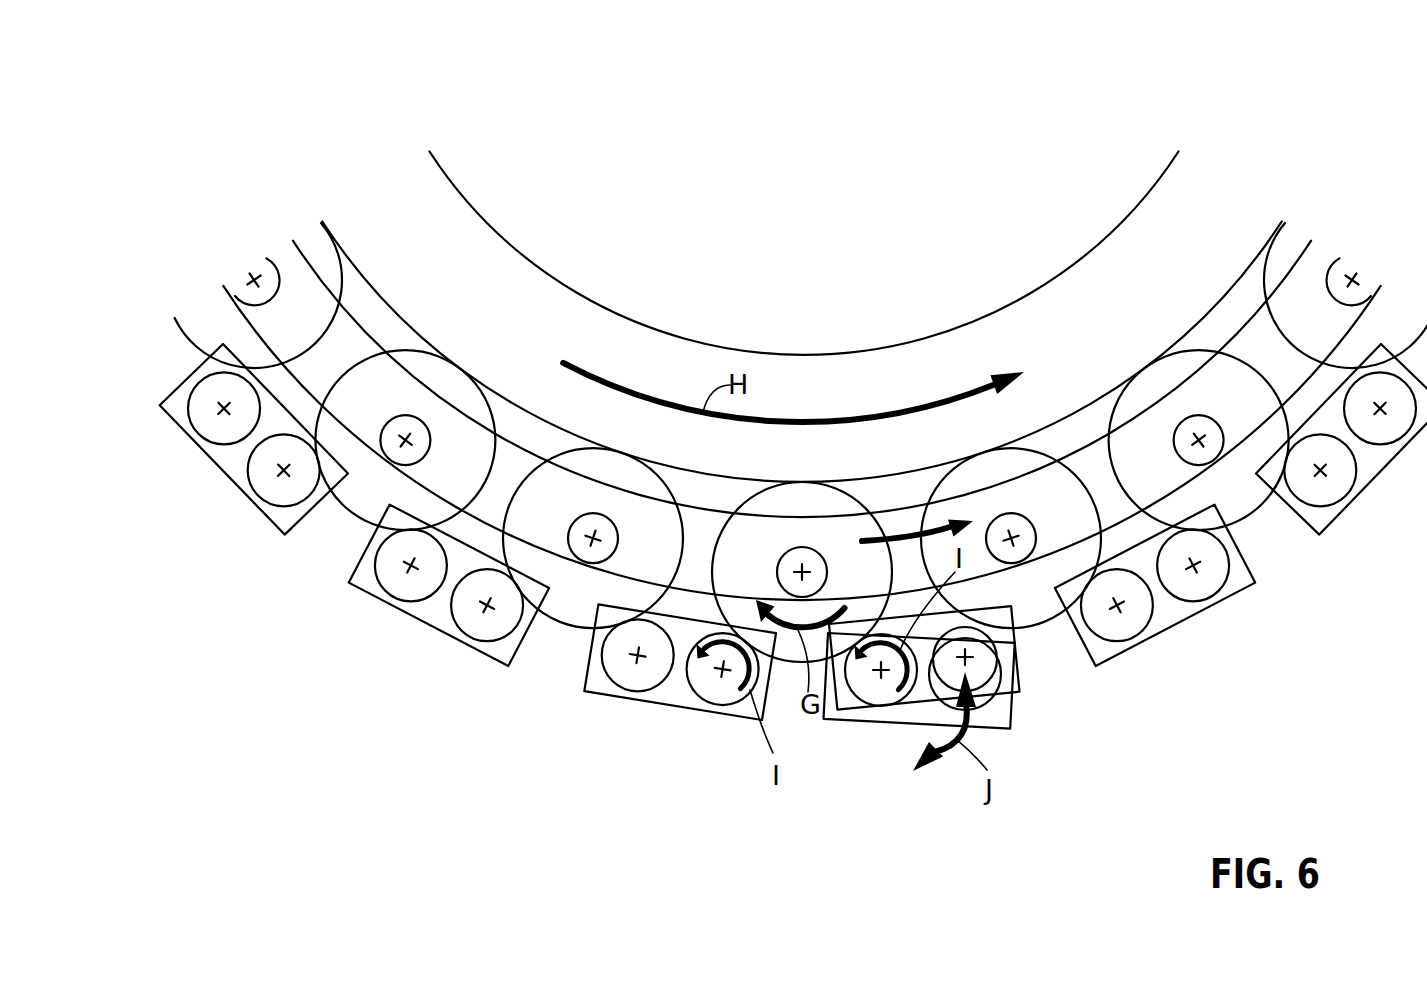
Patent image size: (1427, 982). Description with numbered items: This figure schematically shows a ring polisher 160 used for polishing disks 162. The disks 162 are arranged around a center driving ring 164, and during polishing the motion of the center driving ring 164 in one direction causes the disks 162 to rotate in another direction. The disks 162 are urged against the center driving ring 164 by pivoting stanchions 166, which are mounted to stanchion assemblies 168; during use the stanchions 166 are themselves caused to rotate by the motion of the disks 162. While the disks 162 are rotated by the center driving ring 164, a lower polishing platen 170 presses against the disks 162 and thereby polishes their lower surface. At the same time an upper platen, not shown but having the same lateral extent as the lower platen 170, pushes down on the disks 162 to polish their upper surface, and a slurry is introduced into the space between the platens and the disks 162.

The ring polisher 160 is at (899, 93).
The disks 162 is at (673, 487).
The center driving ring 164 is at (648, 325).
The pivoting stanchions 166 is at (720, 706).
The stanchion assemblies 168 is at (607, 697).
The lower polishing platen 170 is at (513, 440).